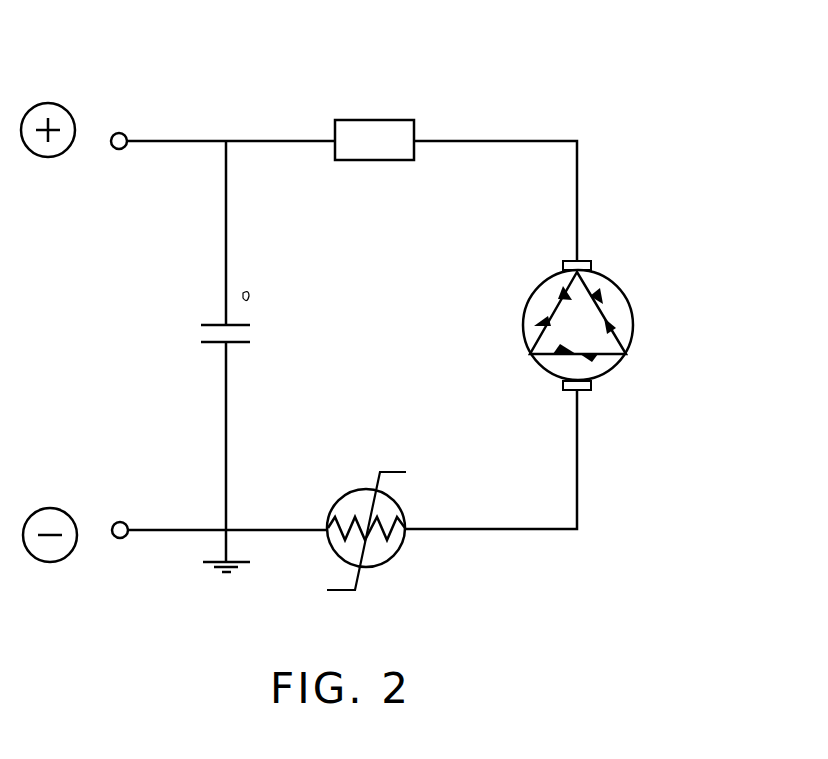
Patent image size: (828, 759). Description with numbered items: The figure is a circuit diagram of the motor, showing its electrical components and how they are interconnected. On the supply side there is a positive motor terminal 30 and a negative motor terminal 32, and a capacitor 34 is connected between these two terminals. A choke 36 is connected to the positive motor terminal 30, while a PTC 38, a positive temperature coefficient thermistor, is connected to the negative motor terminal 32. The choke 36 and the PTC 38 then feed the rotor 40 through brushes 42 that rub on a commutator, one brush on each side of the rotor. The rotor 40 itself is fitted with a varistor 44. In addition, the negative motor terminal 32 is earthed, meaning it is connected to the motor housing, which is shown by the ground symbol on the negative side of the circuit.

The positive motor terminal 30 is at (118, 133).
The negative motor terminal 32 is at (115, 538).
The capacitor 34 is at (210, 325).
The choke 36 is at (378, 137).
The PTC 38 is at (400, 548).
The rotor 40 is at (628, 297).
The brushes 42 is at (582, 262).
The varistor 44 is at (612, 321).